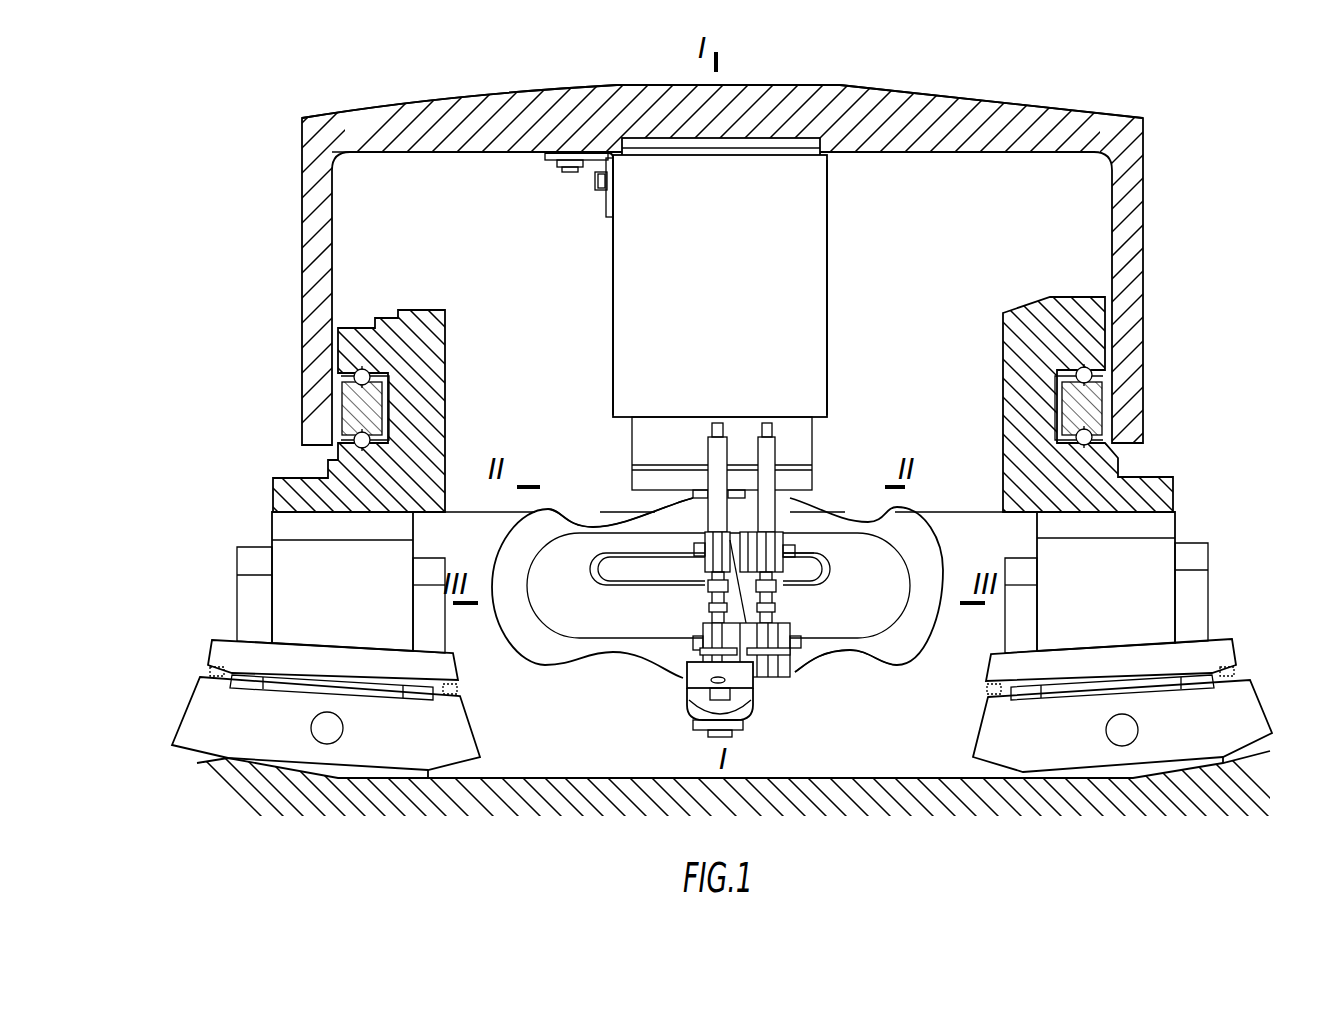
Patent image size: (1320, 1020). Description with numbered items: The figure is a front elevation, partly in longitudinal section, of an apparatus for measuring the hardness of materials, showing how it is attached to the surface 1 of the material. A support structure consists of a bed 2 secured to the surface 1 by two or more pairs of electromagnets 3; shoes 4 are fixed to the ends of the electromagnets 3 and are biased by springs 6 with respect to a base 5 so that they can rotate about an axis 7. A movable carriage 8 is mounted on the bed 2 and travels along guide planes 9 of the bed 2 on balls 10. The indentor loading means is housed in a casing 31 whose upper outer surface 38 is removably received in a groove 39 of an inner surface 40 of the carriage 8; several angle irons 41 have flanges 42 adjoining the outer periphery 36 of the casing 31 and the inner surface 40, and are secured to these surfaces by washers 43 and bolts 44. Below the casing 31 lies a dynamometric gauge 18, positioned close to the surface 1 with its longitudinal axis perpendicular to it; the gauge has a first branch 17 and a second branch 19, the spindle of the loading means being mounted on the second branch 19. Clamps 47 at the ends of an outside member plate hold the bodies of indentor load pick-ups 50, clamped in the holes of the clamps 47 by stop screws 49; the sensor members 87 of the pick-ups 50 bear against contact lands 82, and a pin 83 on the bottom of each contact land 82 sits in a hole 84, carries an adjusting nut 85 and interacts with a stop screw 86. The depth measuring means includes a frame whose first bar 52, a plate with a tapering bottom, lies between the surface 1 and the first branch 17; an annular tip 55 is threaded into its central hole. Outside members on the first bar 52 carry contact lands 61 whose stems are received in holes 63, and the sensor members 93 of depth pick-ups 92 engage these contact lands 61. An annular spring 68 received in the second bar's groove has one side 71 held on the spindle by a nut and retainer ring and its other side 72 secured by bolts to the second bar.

The surface of material 1 is at (540, 788).
The bed 2 is at (352, 337).
The electromagnets 3 is at (237, 590).
The shoes 4 is at (460, 737).
The base 5 is at (222, 648).
The springs 6 is at (208, 672).
The axis 7 is at (344, 728).
The movable carriage 8 is at (312, 328).
The guide planes 9 is at (350, 385).
The balls 10 is at (352, 378).
The first branch 17 is at (918, 640).
The dynamometric gauge 18 is at (922, 543).
The second branch 19 is at (602, 522).
The casing 31 is at (802, 217).
The outer periphery of the casing 36 is at (613, 298).
The upper outer surface of the casing 38 is at (742, 147).
The groove 39 is at (862, 88).
The inner surface of the carriage 40 is at (498, 154).
The angle irons 41 is at (597, 145).
The flanges 42 is at (550, 160).
The washers 43 is at (557, 168).
The bolts 44 is at (573, 168).
The clamps 47 is at (775, 538).
The clamping screw 49 is at (792, 545).
The indentor load pick-ups 50 is at (770, 452).
The first bar 52 is at (692, 680).
The annular tip 55 is at (736, 733).
The contact lands 61 is at (707, 618).
The holes 63 is at (717, 683).
The annular spring 68 is at (833, 572).
The one side of the annular spring 71 is at (595, 583).
The other side of the annular spring 72 is at (792, 553).
The contact lands 82 is at (797, 660).
The pin 83 is at (767, 678).
The hole 84 is at (783, 676).
The adjusting nut 85 is at (790, 645).
The stop screw 86 is at (808, 637).
The sensor members 87 is at (778, 607).
The pick-ups 92 is at (712, 447).
The sensor members 93 is at (712, 607).